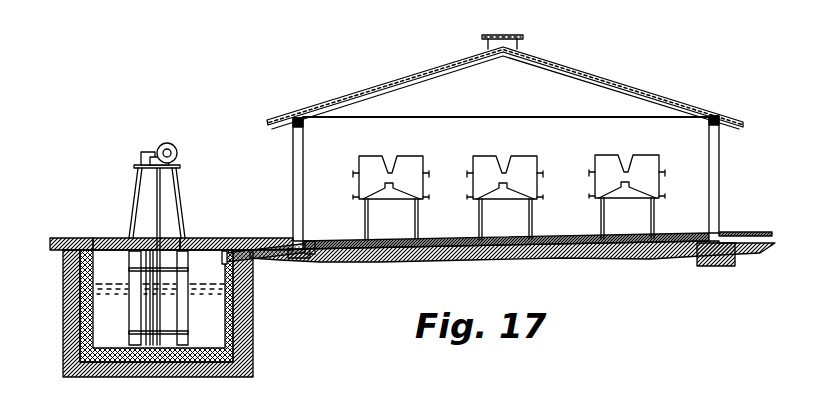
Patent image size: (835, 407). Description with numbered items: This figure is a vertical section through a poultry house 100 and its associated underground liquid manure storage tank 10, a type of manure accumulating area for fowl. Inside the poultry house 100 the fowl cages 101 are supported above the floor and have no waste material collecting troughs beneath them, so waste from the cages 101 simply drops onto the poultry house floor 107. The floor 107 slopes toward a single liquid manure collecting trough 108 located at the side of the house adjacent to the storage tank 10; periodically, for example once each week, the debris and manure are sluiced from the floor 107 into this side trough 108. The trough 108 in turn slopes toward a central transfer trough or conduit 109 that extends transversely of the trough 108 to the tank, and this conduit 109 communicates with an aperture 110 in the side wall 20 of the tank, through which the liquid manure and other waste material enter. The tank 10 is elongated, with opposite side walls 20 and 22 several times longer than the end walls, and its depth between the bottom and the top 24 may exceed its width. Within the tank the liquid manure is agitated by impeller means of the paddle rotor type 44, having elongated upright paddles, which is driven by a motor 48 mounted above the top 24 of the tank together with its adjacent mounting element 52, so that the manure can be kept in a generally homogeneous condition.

The liquid manure mixing and storage tank 10 is at (86, 236).
The side wall 20 is at (224, 338).
The side wall 22 is at (95, 338).
The top 24 is at (107, 238).
The paddle rotor 44 is at (188, 240).
The motor 48 is at (175, 147).
The motor mount 52 is at (182, 165).
The poultry house 100 is at (720, 168).
The fowl cages 101 is at (480, 156).
The poultry house floor 107 is at (570, 237).
The liquid manure collecting trough 108 is at (315, 245).
The transfer trough or conduit 109 is at (283, 265).
The aperture 110 is at (222, 258).